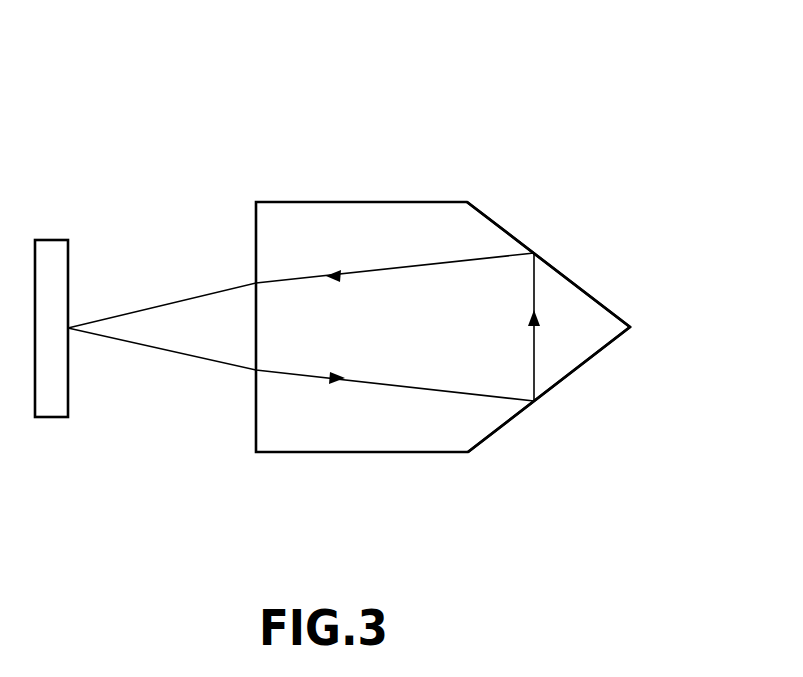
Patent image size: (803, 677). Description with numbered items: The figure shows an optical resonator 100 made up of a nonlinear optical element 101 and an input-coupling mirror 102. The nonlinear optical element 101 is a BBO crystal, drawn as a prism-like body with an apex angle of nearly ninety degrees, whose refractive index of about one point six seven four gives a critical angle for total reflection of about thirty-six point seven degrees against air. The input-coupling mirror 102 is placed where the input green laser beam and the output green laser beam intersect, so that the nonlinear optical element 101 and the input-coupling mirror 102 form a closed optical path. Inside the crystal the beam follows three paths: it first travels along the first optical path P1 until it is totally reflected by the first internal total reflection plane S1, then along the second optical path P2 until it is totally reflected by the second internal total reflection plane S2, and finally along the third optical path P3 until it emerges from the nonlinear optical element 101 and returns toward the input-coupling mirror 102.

The optical resonator 100 is at (538, 43).
The nonlinear optical element 101 is at (320, 454).
The input-coupling mirror 102 is at (58, 417).
The first internal total reflection plane S1 is at (495, 431).
The second internal total reflection plane S2 is at (494, 222).
The first optical path P1 is at (283, 372).
The second optical path P2 is at (535, 375).
The third optical path P3 is at (289, 280).